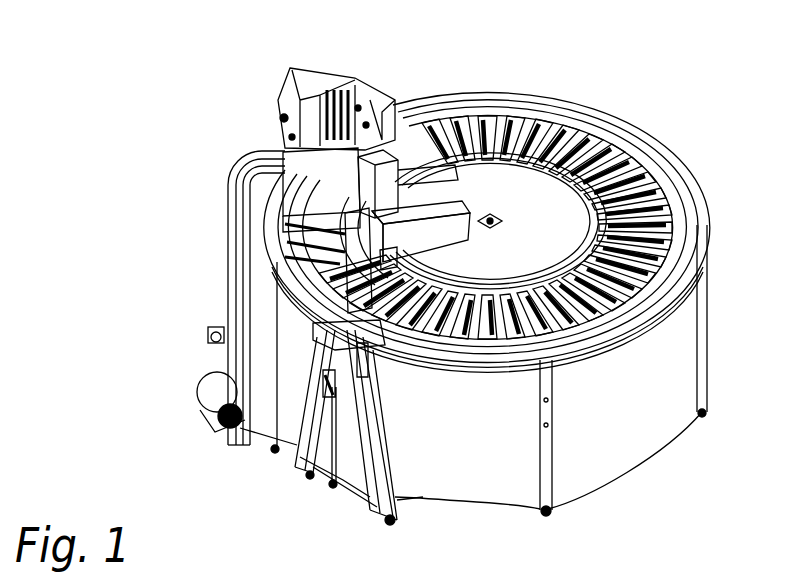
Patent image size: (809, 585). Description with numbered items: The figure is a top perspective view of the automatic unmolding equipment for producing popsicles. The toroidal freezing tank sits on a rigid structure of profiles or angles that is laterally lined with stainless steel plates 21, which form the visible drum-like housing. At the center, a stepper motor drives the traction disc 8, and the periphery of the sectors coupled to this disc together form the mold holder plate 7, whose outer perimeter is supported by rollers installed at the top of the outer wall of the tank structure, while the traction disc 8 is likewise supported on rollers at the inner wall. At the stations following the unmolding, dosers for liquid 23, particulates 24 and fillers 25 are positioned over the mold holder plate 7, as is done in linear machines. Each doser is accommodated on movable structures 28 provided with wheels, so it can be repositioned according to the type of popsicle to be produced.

The mold holder plate 7 is at (655, 130).
The traction disc 8 is at (513, 190).
The stainless steel plates 21 is at (650, 413).
The doser for liquid 23 is at (297, 100).
The doser for particulates 24 is at (305, 178).
The doser for fillers 25 is at (360, 250).
The movable structures 28 is at (233, 438).